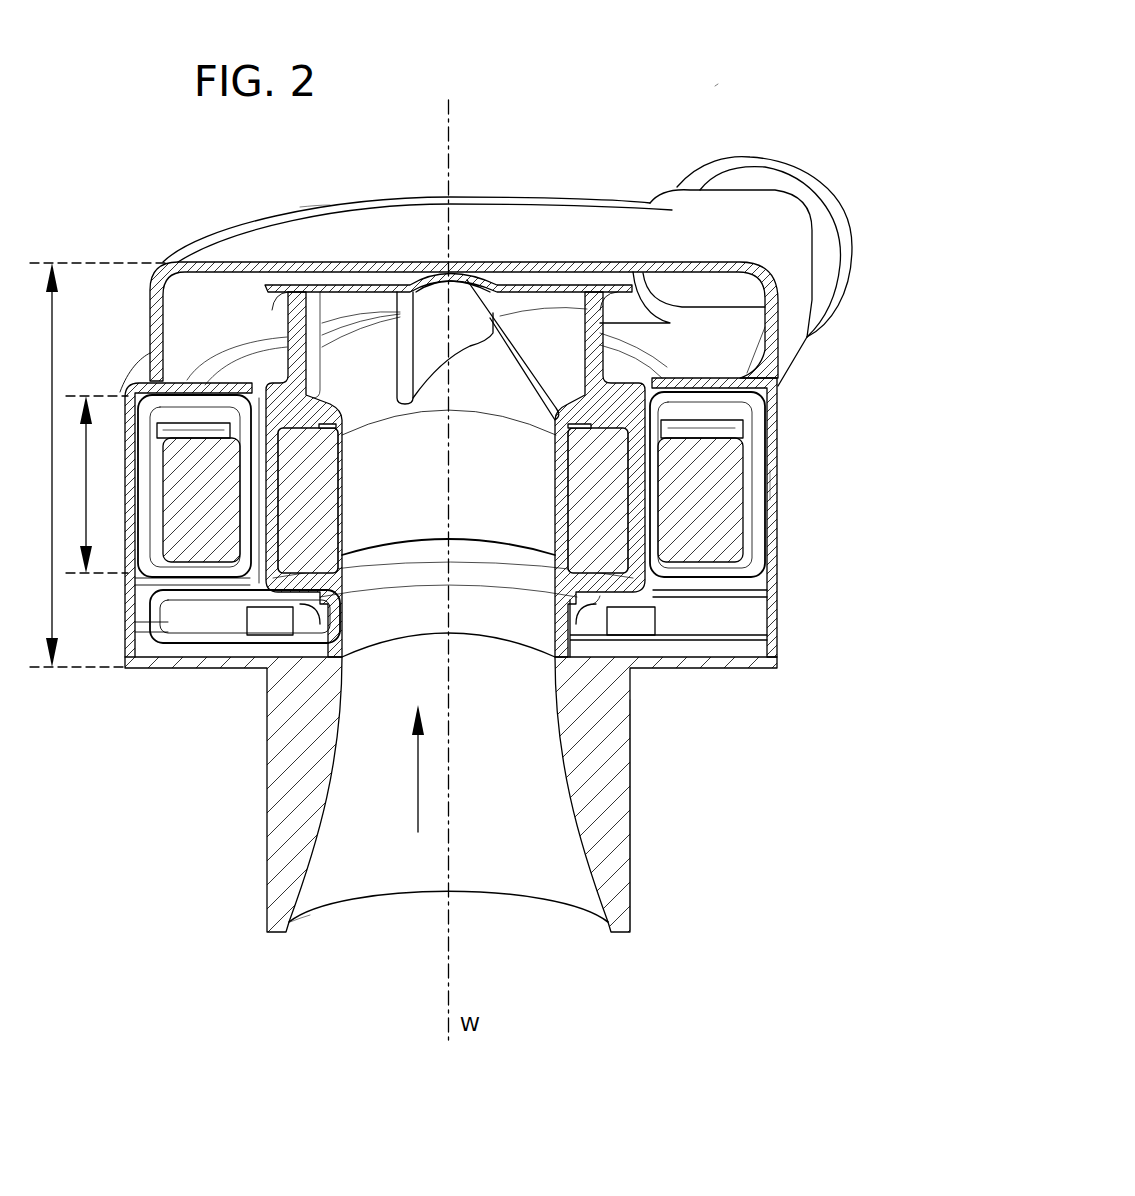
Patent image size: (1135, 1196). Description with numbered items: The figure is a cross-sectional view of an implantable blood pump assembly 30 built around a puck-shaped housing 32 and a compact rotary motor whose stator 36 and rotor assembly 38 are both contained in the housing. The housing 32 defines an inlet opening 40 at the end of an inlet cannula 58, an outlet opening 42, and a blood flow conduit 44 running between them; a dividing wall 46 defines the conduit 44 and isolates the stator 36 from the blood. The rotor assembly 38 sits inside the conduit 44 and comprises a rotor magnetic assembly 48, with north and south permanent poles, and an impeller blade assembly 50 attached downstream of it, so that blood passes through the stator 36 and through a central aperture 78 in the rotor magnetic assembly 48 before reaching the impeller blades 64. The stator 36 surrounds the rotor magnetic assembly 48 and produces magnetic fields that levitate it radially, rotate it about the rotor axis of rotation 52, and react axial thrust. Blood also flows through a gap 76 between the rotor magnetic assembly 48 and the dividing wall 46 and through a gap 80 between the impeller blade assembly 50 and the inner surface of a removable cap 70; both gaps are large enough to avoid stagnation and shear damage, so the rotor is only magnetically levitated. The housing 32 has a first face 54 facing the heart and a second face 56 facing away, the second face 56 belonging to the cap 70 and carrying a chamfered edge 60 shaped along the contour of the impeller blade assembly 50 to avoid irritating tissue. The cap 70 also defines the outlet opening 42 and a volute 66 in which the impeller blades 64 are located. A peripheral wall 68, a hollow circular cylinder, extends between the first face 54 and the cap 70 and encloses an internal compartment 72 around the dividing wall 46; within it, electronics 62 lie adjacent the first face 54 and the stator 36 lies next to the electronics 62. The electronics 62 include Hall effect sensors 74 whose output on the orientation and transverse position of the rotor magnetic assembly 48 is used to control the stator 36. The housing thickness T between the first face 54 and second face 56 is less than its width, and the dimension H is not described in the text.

The implantable blood pump assembly 30 is at (725, 68).
The housing 32 is at (249, 218).
The stator 36 is at (882, 449).
The rotor assembly 38 is at (369, 255).
The inlet opening 40 is at (356, 928).
The outlet opening 42 is at (690, 143).
The blood flow conduit 44 is at (448, 777).
The dividing wall 46 is at (600, 598).
The rotor magnetic assembly 48 is at (453, 498).
The impeller blade assembly 50 is at (298, 340).
The rotor axis of rotation 52 is at (456, 126).
The first face 54 is at (178, 672).
The second face 56 is at (548, 228).
The inlet cannula 58 is at (632, 824).
The chamfered edge 60 is at (166, 261).
The electronics 62 is at (725, 622).
The impeller blades 64 is at (581, 464).
The volute 66 is at (233, 300).
The peripheral wall 68 is at (780, 433).
The removable cap 70 is at (808, 340).
The internal compartment 72 is at (750, 578).
The Hall effect sensors 74 is at (270, 625).
The gap 76 is at (657, 525).
The central aperture 78 is at (453, 538).
The gap 80 is at (330, 283).
The thickness T is at (97, 465).
The magnet height H is at (97, 484).